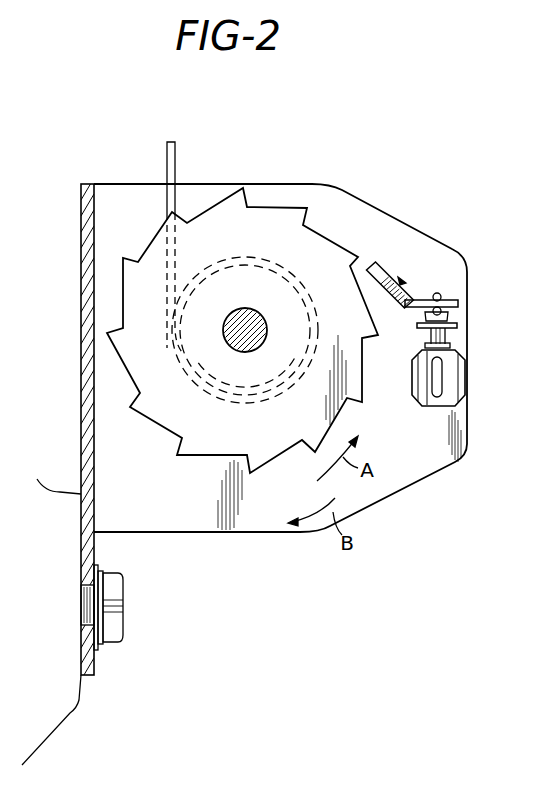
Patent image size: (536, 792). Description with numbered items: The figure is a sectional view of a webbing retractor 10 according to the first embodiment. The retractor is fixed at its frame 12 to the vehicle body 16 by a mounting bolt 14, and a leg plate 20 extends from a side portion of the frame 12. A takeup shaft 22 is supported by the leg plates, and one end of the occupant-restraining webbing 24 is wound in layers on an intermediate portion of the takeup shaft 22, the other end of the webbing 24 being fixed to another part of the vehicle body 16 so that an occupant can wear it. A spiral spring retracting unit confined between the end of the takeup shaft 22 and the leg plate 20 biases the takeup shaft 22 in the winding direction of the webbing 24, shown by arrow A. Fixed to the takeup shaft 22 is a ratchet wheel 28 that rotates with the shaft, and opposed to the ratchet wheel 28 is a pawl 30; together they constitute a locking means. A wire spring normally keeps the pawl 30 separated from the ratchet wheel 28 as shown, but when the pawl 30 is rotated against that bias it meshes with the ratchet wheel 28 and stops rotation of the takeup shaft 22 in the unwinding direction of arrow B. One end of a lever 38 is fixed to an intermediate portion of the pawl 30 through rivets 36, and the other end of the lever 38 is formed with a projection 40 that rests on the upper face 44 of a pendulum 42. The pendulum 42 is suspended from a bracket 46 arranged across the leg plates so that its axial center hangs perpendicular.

The webbing retractor 10 is at (392, 201).
The frame 12 is at (95, 545).
The mounting bolt 14 is at (124, 600).
The vehicle body 16 is at (72, 700).
The leg plate 20 is at (410, 233).
The takeup shaft 22 is at (245, 308).
The occupant-restraining webbing 24 is at (176, 150).
The ratchet wheel 28 is at (327, 248).
The pawl 30 is at (375, 257).
The rivets 36 is at (403, 279).
The lever 38 is at (413, 298).
The projection 40 is at (463, 306).
The pendulum 42 is at (465, 385).
The upper face 44 is at (425, 313).
The bracket 46 is at (458, 328).